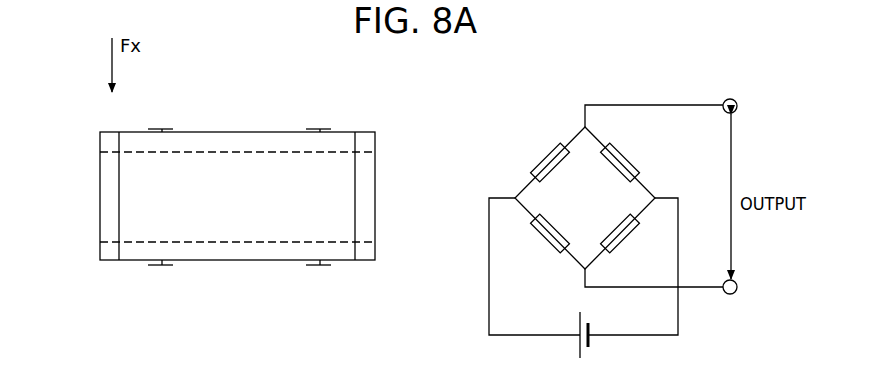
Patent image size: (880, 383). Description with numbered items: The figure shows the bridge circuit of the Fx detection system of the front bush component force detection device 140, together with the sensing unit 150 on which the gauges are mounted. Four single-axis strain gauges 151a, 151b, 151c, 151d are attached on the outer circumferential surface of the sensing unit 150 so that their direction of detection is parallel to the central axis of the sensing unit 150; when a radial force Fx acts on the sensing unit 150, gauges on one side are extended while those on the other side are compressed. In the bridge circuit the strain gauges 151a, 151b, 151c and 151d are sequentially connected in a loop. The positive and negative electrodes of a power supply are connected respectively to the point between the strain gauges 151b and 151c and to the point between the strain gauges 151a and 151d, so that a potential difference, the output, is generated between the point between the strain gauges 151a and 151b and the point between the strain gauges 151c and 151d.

The front bush component force detection device 140 is at (85, 101).
The sensing unit 150 is at (237, 132).
The strain gauge 151a is at (163, 129).
The strain gauge 151b is at (320, 129).
The strain gauge 151c is at (320, 265).
The strain gauge 151d is at (162, 265).